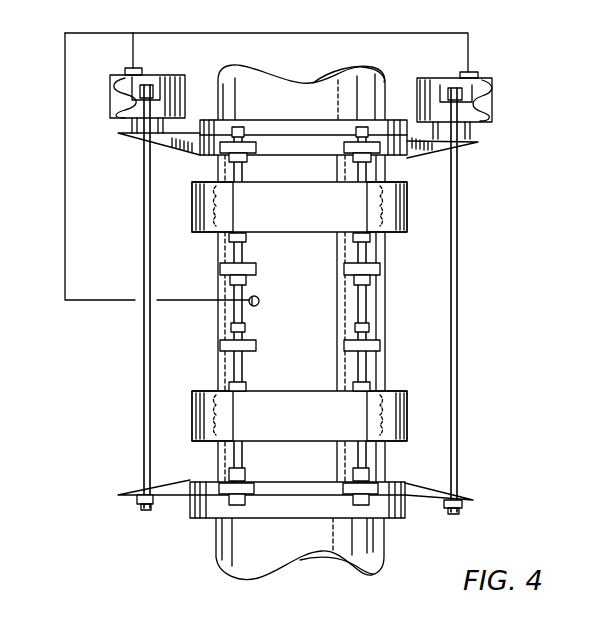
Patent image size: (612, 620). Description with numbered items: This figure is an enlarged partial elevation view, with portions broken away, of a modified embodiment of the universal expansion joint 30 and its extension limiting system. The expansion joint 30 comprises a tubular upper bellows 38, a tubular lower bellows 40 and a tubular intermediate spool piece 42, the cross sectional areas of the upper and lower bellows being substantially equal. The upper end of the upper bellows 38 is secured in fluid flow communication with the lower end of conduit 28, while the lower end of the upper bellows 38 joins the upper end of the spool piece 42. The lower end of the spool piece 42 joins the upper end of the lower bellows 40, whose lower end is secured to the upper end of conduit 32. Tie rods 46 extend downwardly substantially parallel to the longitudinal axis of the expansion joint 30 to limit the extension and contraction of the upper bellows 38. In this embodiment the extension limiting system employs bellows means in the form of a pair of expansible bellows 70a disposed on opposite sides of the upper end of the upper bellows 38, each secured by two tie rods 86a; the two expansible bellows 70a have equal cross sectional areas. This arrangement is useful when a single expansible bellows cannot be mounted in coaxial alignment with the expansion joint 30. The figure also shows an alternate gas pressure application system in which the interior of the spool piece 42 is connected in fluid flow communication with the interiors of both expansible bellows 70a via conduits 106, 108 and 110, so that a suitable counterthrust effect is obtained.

The conduit 28 is at (386, 82).
The universal expansion joint 30 is at (396, 277).
The conduit 32 is at (367, 538).
The upper bellows 38 is at (398, 210).
The lower bellows 40 is at (390, 412).
The spool piece 42 is at (363, 306).
The tie rod 46 is at (237, 172).
The expansible bellows 70a is at (118, 100).
The tie rod 86a is at (142, 405).
The conduit 106 is at (66, 247).
The conduit 108 is at (137, 47).
The conduit 110 is at (433, 33).